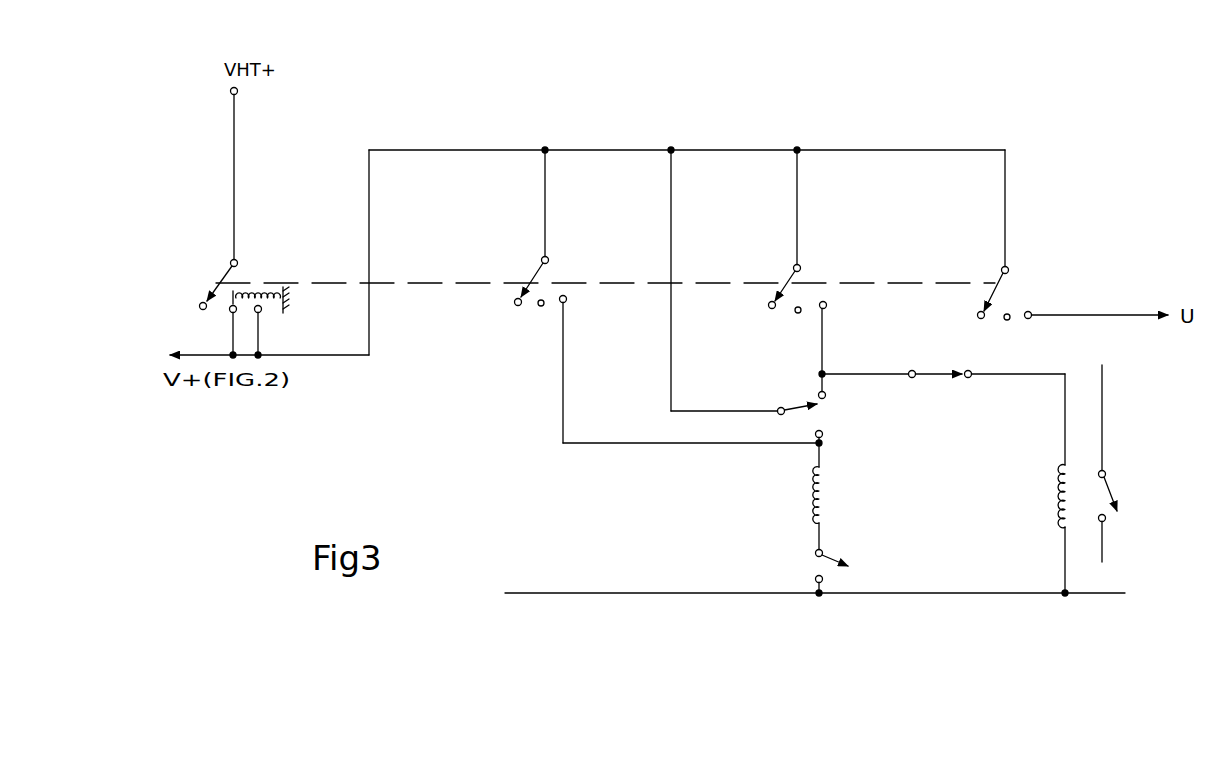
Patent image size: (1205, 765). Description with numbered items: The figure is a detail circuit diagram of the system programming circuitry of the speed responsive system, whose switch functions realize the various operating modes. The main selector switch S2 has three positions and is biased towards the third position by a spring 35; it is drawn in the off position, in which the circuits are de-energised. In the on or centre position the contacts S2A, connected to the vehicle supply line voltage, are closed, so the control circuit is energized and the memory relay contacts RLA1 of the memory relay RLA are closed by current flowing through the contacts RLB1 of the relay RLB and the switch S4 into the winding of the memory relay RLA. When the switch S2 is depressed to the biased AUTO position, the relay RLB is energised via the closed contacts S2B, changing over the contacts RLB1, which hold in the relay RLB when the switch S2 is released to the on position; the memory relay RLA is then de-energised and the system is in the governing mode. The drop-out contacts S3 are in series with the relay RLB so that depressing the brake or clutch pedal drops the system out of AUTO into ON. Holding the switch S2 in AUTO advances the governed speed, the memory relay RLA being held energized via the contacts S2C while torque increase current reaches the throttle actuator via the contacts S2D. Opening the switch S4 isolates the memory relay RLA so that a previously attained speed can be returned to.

The main selector switch S2 is at (933, 144).
The contacts of switch S2 S2A is at (247, 306).
The switch contacts S2B is at (556, 229).
The contacts S2C is at (808, 233).
The contacts S2D is at (1016, 235).
The spring 35 is at (269, 305).
The drop-out contacts S3 is at (852, 573).
The switch S4 is at (943, 388).
The memory relay RLA is at (1025, 485).
The memory relay contacts RLA1 is at (1137, 463).
The relay RLB is at (841, 490).
The contacts of relay RLB RLB1 is at (829, 412).